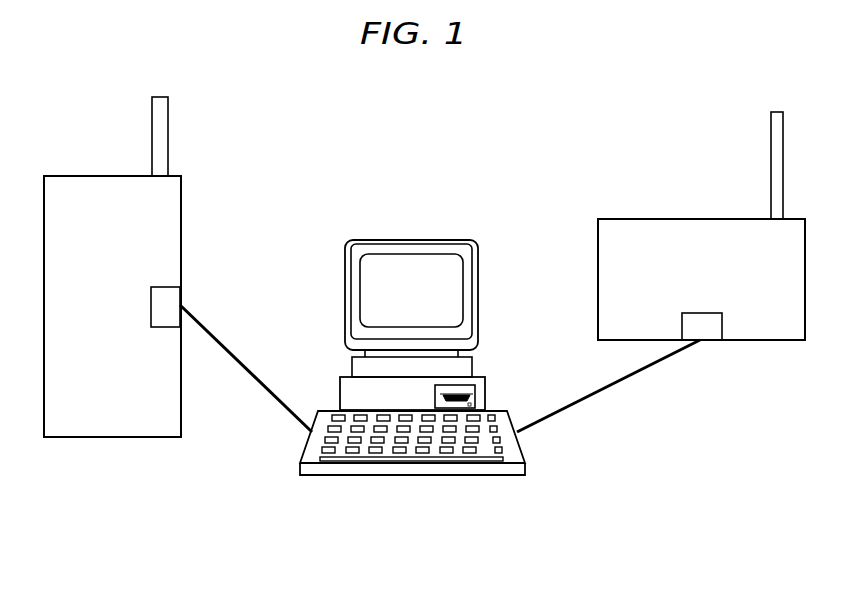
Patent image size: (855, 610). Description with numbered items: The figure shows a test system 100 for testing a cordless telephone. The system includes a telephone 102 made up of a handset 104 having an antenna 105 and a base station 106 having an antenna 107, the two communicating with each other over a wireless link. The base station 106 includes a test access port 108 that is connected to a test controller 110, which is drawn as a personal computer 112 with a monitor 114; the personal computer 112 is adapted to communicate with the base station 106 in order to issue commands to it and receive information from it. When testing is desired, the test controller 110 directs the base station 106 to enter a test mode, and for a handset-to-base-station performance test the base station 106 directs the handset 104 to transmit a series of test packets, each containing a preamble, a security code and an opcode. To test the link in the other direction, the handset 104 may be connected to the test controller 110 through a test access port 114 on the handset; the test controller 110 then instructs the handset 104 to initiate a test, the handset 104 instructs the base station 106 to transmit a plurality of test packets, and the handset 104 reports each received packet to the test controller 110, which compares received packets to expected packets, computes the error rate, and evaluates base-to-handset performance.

The test system 100 is at (568, 509).
The telephone 102 is at (104, 88).
The handset 104 is at (68, 176).
The antenna 105 is at (170, 139).
The base station 106 is at (634, 218).
The antenna 107 is at (771, 170).
The test access port 108 is at (682, 328).
The test controller 110 is at (324, 296).
The personal computer 112 is at (340, 392).
The test access port 114 is at (165, 328).